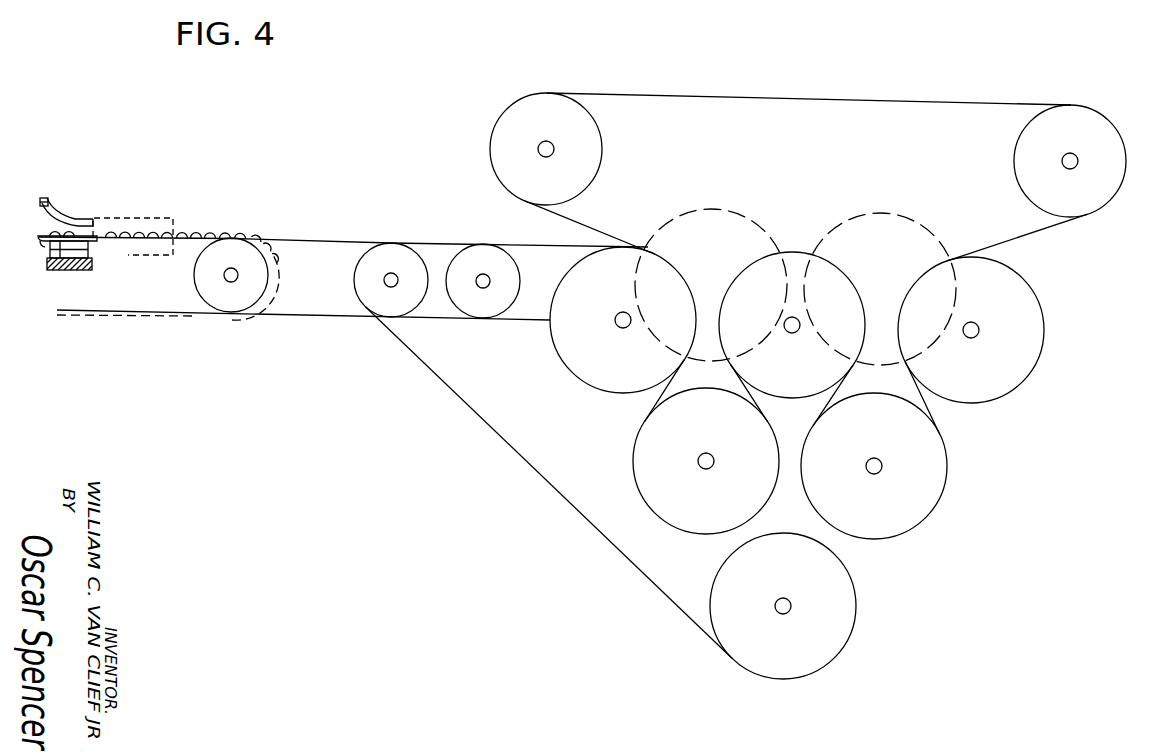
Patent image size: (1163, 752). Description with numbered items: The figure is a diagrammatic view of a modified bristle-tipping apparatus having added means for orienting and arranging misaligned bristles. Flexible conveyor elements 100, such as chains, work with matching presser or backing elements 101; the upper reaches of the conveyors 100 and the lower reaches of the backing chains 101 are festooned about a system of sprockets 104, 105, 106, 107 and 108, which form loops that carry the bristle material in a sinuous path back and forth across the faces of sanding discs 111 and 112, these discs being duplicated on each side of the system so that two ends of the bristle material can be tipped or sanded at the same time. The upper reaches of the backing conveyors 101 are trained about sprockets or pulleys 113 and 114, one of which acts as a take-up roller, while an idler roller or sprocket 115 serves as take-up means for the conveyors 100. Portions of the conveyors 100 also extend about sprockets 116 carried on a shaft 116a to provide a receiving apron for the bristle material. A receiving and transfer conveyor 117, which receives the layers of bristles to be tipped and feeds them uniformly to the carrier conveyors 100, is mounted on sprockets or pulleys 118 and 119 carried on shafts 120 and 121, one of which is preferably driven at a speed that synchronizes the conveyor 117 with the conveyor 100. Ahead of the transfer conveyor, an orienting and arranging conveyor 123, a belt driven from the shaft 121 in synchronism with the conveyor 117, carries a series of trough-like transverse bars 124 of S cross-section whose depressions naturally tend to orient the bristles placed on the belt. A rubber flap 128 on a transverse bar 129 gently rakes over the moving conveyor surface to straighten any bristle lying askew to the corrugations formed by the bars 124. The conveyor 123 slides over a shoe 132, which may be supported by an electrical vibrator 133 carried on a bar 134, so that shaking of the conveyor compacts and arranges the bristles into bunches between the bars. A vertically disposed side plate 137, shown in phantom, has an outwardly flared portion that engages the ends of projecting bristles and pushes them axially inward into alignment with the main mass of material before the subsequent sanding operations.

The flexible conveyor elements 100 is at (532, 463).
The presser or backing elements 101 is at (718, 97).
The sprocket 104 is at (579, 378).
The sprocket 105 is at (784, 396).
The sprocket 106 is at (962, 399).
The sprocket 107 is at (677, 523).
The sprocket 108 is at (872, 533).
The sanding disc 111 is at (730, 210).
The sanding disc 112 is at (882, 213).
The sprocket or pulley 113 is at (603, 153).
The sprocket or pulley 114 is at (1014, 159).
The idler roller or sprocket 115 is at (785, 674).
The sprocket 116 is at (354, 280).
The shaft 116a is at (392, 273).
The receiving and transfer conveyor 117 is at (295, 317).
The sprocket or pulley 118 is at (508, 307).
The sprocket or pulley 119 is at (197, 288).
The shaft 120 is at (483, 274).
The shaft 121 is at (226, 281).
The orienting and arranging conveyor 123 is at (213, 227).
The trough-like transverse bars 124 is at (243, 232).
The rubber flap 128 is at (77, 219).
The transverse bar 129 is at (42, 198).
The shoe 132 is at (43, 242).
The electrical vibrator 133 is at (88, 259).
The bar 134 is at (65, 270).
The side plate 137 is at (158, 216).